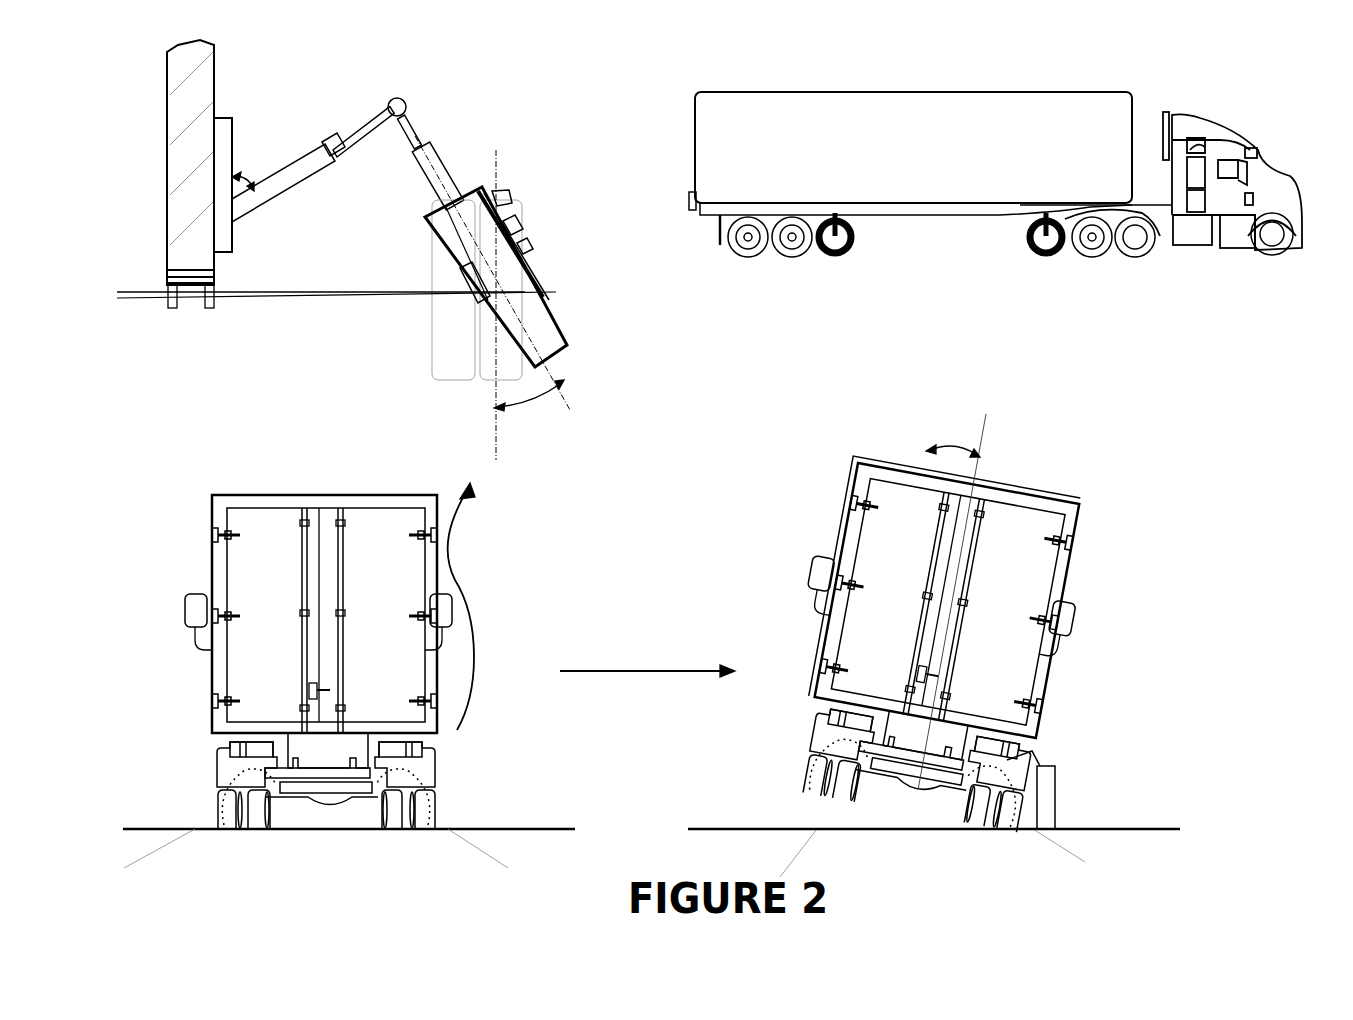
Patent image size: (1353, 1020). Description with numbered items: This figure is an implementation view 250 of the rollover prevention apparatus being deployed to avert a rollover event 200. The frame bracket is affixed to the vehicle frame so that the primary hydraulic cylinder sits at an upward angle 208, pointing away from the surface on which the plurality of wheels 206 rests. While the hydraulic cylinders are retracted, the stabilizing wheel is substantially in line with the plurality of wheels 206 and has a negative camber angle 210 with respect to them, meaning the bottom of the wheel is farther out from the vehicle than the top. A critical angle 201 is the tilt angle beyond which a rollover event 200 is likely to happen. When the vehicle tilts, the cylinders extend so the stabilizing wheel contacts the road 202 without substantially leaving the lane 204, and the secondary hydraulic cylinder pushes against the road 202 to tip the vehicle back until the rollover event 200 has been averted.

The rollover event 200 is at (645, 649).
The critical angle 201 is at (960, 450).
The road 202 is at (293, 831).
The lane 204 is at (815, 855).
The plurality of wheels 206 is at (784, 257).
The upward angle 208 is at (239, 166).
The negative camber angle 210 is at (540, 395).
The implementation view 250 is at (1182, 566).